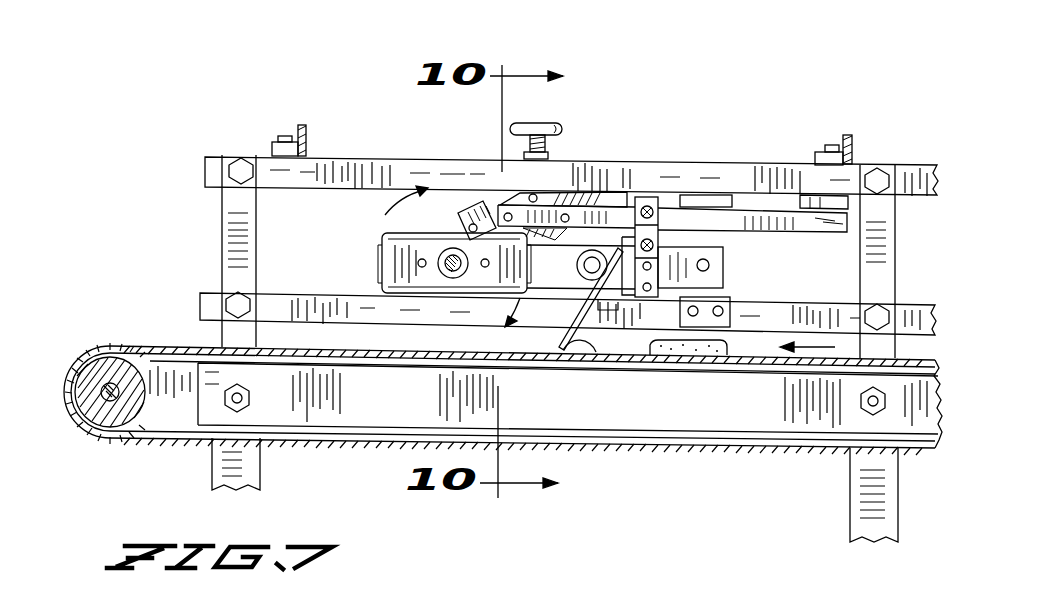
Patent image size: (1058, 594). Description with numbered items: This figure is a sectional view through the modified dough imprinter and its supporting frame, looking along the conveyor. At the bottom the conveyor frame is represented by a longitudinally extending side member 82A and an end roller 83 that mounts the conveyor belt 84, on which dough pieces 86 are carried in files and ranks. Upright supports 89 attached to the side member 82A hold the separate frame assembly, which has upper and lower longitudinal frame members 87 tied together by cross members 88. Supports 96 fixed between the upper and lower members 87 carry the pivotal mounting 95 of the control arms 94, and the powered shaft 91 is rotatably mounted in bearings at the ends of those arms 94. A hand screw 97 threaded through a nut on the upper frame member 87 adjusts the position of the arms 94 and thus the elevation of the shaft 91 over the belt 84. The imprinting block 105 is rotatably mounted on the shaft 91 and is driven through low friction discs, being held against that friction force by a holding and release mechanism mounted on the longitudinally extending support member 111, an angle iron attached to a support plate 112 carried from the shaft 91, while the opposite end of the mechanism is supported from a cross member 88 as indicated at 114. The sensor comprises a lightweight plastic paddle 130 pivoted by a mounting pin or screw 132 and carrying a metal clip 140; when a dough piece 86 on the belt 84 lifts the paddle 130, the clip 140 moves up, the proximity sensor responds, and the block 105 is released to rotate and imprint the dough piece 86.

The conveyor side member 82A is at (307, 403).
The end roller 83 is at (96, 370).
The conveyor belt 84 is at (168, 346).
The dough piece 86 is at (708, 348).
The longitudinal frame member 87 is at (342, 170).
The cross member 88 is at (298, 133).
The upright support 89 is at (223, 196).
The shaft 91 is at (452, 275).
The control arm 94 is at (708, 277).
The pivot 95 is at (712, 263).
The support 96 is at (700, 202).
The hand screw 97 is at (558, 108).
The imprinting block 105 is at (382, 250).
The longitudinally extending support member 111 is at (818, 224).
The support plate 112 is at (585, 172).
The cross member support connection 114 is at (813, 197).
The paddle 130 is at (568, 352).
The mounting pin or screw 132 is at (608, 245).
The metal clip 140 is at (588, 250).